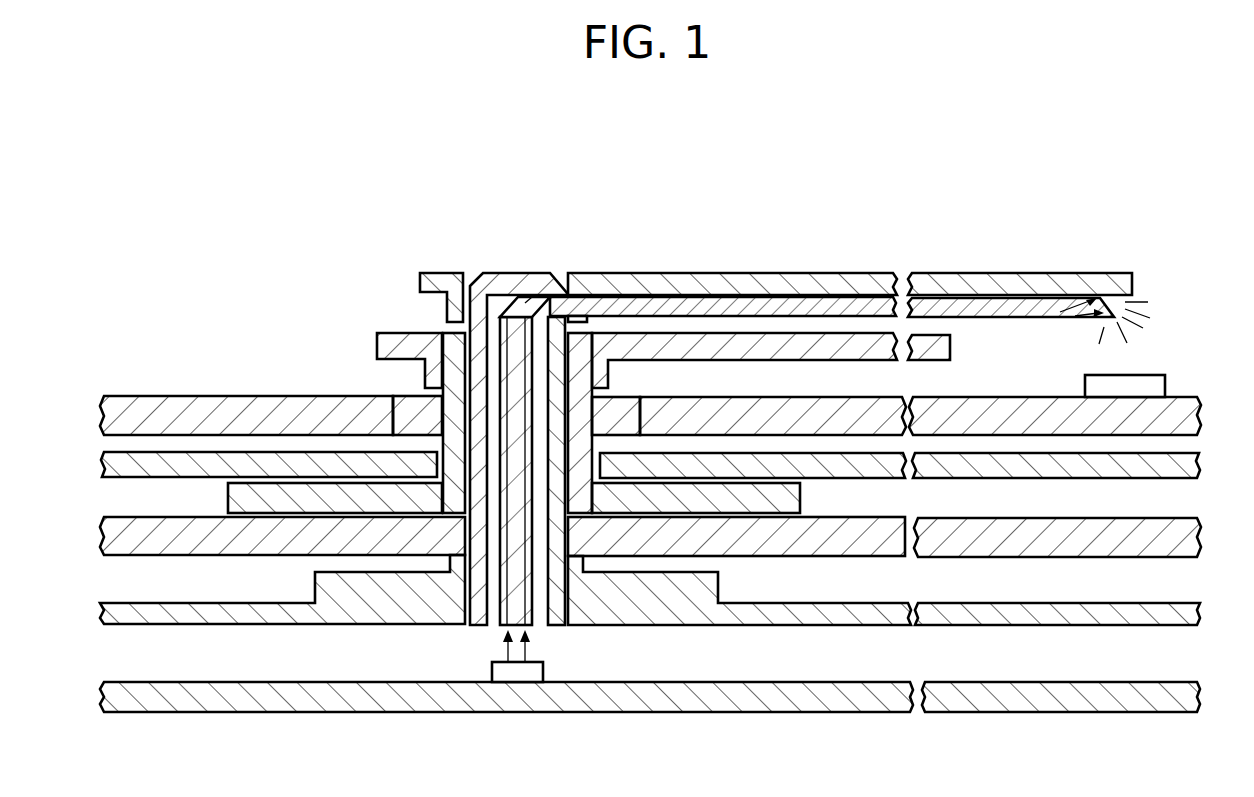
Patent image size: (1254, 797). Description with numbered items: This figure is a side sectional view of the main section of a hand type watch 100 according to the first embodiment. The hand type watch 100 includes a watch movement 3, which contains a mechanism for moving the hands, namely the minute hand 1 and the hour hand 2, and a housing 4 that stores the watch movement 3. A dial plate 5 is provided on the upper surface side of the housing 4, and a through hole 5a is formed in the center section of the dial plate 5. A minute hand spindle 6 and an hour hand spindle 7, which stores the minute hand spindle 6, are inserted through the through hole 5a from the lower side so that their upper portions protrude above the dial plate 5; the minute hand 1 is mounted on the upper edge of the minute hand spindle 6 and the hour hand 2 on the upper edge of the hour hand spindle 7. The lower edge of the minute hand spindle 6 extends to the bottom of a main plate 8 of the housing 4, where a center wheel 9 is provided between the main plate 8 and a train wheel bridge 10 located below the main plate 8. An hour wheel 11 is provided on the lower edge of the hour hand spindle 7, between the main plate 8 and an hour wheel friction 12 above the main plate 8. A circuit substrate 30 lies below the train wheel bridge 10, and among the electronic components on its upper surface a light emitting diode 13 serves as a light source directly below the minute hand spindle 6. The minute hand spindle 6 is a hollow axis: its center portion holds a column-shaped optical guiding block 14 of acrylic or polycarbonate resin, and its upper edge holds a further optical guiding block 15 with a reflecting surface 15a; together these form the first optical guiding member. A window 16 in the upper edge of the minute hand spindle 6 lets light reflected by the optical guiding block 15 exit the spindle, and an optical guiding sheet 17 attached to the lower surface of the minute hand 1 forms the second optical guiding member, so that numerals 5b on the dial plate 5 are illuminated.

The minute hand 1 is at (775, 273).
The hour hand 2 is at (805, 345).
The watch movement 3 is at (276, 584).
The housing 4 is at (98, 521).
The dial plate 5 is at (195, 396).
The through hole 5a is at (402, 400).
The numerals 5b is at (1165, 376).
The minute hand spindle 6 is at (495, 273).
The hour hand spindle 7 is at (443, 375).
The main plate 8 is at (1197, 527).
The center wheel 9 is at (387, 600).
The train wheel bridge 10 is at (713, 623).
The hour wheel 11 is at (804, 497).
The hour wheel friction 12 is at (342, 455).
The light emitting diode 13 is at (512, 675).
The optical guiding block 14 is at (504, 590).
The optical guiding block 15 is at (540, 300).
The reflecting surface 15a is at (513, 303).
The window 16 is at (562, 303).
The optical guiding sheet 17 is at (1000, 300).
The circuit substrate 30 is at (566, 700).
The hand type watch 100 is at (590, 250).